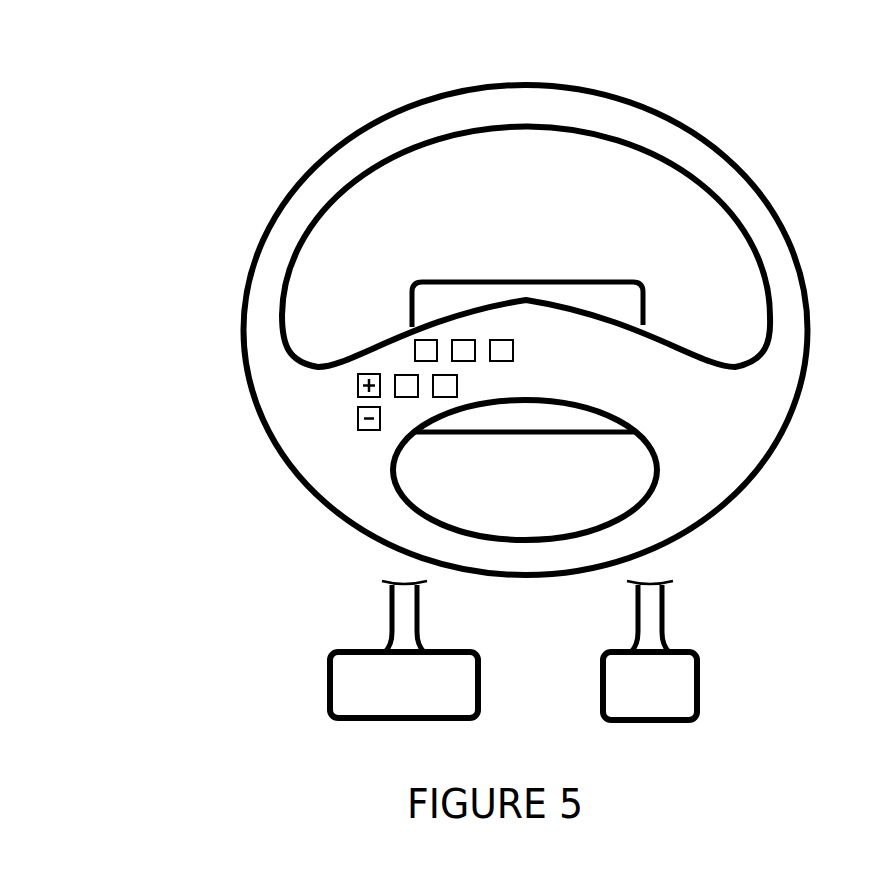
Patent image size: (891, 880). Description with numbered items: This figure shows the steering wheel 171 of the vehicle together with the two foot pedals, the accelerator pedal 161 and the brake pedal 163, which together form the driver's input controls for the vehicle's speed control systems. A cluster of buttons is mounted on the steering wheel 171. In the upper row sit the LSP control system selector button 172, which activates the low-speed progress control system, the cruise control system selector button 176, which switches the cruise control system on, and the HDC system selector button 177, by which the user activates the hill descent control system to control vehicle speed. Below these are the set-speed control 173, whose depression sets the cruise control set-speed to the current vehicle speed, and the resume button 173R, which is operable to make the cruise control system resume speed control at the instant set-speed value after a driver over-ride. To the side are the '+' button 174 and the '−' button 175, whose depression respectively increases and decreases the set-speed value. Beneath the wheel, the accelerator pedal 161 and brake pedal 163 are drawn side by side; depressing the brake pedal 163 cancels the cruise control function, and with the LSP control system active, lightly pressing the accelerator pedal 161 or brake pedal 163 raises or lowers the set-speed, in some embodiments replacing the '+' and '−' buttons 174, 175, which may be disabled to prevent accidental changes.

The steering wheel 171 is at (780, 280).
The LSP control system selector button 172 is at (430, 340).
The cruise control system selector button 176 is at (468, 340).
The HDC system selector button 177 is at (500, 340).
The set-speed control 173 is at (393, 377).
The resume button 173R is at (443, 397).
The '+' button 174 is at (358, 381).
The '−' button 175 is at (358, 423).
The brake pedal 163 is at (345, 682).
The accelerator pedal 161 is at (677, 680).